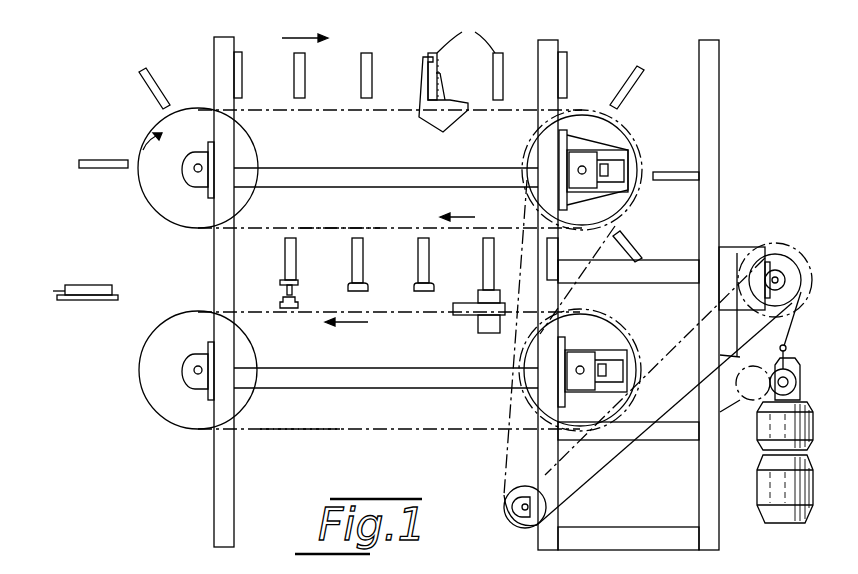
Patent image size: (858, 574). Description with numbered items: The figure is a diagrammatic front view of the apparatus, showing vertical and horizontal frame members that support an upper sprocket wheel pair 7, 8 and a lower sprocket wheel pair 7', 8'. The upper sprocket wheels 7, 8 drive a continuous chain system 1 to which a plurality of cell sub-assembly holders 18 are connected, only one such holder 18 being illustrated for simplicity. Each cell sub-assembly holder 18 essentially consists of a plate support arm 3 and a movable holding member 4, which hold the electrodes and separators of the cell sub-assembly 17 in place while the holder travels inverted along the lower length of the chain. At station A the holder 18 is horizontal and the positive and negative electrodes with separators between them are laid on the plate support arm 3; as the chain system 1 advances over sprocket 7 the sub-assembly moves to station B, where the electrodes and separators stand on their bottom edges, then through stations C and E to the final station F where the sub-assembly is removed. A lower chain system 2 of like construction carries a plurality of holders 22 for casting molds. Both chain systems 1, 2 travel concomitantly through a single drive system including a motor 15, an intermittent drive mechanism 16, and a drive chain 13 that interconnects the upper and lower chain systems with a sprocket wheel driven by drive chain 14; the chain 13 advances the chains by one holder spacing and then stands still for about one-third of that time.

The continuous chain system 1 is at (305, 112).
The lower chain system 2 is at (398, 313).
The plate support arm 3 is at (424, 76).
The movable holding member 4 is at (440, 76).
The upper sprocket wheel 7 is at (175, 168).
The lower sprocket wheel 7' is at (173, 370).
The upper sprocket wheel 8 is at (592, 170).
The lower sprocket wheel 8' is at (590, 369).
The drive chain 13 is at (505, 458).
The drive chain 14 is at (814, 282).
The motor 15 is at (815, 470).
The intermittent drive mechanism 16 is at (803, 377).
The cell sub-assembly 17 is at (466, 31).
The cell sub-assembly holder 18 is at (437, 125).
The holder for casting molds 22 is at (478, 318).
The station A is at (103, 156).
The station B is at (393, 24).
The station C is at (685, 264).
The station E is at (298, 273).
The station F is at (112, 288).